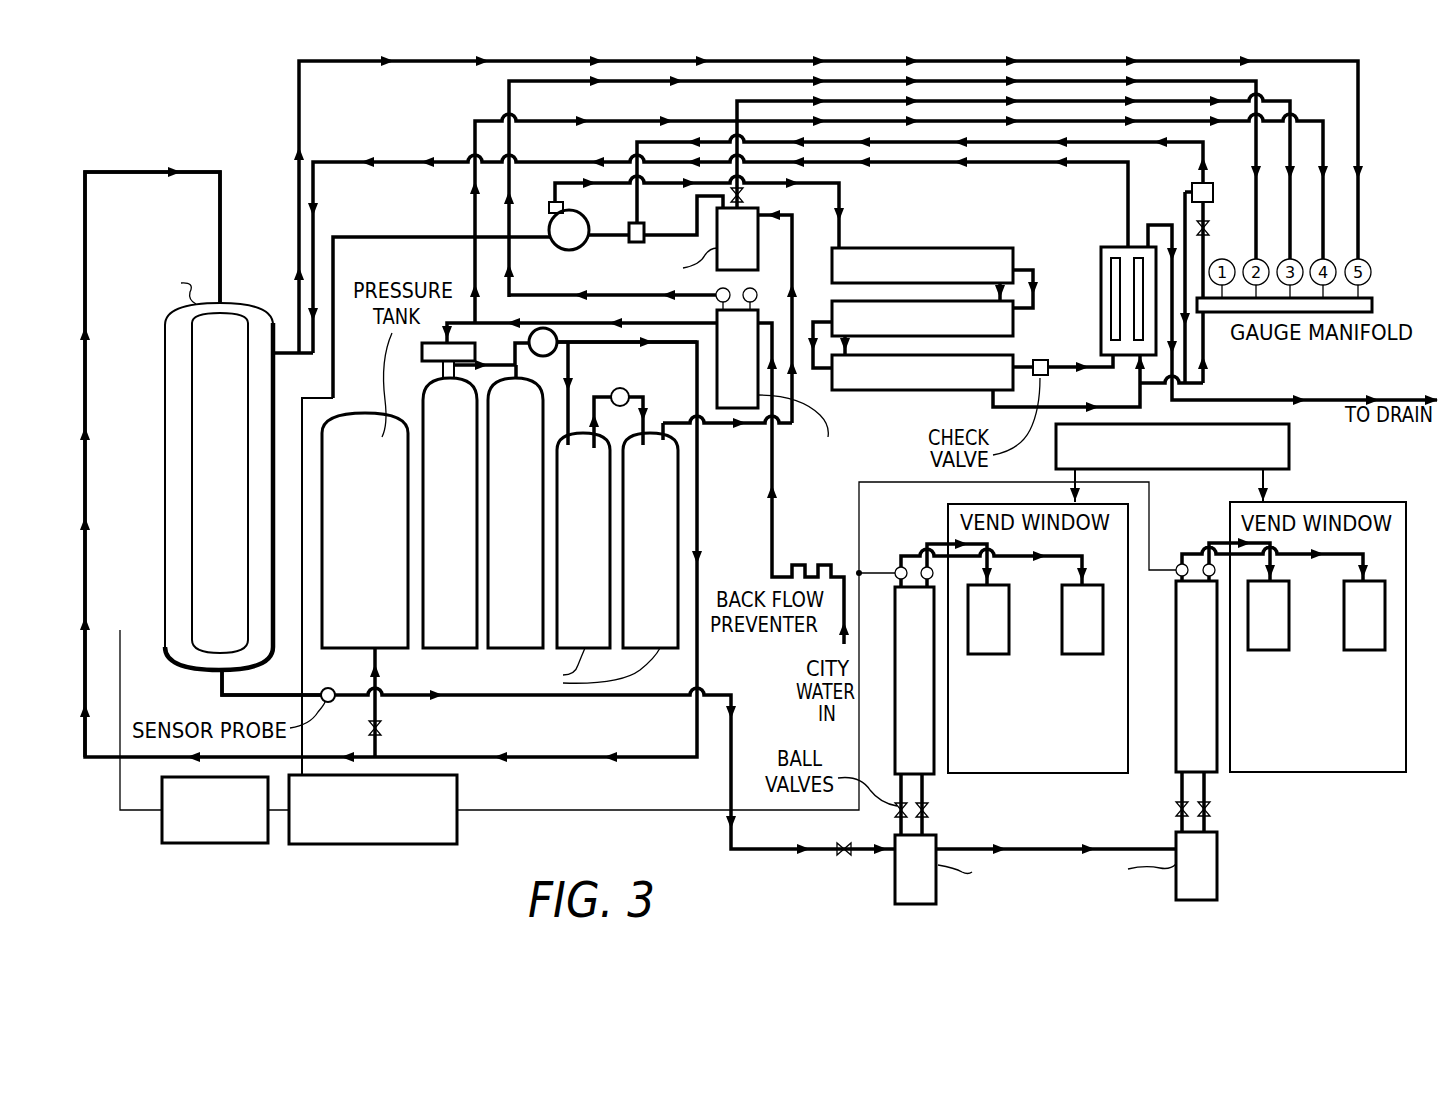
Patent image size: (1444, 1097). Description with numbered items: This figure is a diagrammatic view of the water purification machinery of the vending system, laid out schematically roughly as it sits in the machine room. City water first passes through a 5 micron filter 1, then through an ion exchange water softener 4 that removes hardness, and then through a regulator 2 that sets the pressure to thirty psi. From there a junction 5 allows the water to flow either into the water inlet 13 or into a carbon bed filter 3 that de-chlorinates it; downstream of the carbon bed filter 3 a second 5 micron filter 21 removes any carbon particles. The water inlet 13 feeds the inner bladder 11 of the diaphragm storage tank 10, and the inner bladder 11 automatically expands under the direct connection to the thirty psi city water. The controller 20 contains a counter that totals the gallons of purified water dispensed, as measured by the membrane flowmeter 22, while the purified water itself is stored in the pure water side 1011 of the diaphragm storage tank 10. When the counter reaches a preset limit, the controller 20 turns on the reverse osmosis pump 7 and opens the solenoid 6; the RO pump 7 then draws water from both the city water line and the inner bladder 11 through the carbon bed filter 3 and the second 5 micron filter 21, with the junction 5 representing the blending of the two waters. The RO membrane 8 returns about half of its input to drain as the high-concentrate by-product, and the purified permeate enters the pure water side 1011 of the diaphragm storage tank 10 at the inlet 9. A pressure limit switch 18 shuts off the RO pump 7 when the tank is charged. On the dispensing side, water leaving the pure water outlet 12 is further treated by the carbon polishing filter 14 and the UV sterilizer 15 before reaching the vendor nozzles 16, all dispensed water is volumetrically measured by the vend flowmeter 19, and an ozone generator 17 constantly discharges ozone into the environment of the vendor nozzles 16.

The 5 micron filter 1 is at (748, 385).
The regulator 2 is at (529, 342).
The carbon bed filter 3 is at (595, 613).
The ion exchange water softener 4 is at (462, 613).
The junction 5 is at (556, 348).
The solenoid 6 is at (645, 225).
The reverse osmosis pump 7 is at (552, 226).
The RO membrane 8 is at (923, 248).
The inlet 9 is at (290, 377).
The diaphragm storage tank 10 is at (168, 503).
The inner bladder 11 is at (240, 553).
The pure water outlet 12 is at (233, 693).
The water inlet 13 is at (123, 172).
The carbon polishing filter 14 is at (938, 886).
The UV sterilizer 15 is at (924, 758).
The vendor nozzle 16 is at (981, 651).
The ozone generator 17 is at (1289, 449).
The pressure limit switch 18 is at (220, 843).
The vend flowmeter 19 is at (899, 565).
The controller 20 is at (382, 844).
The second 5 micron filter 21 is at (752, 248).
The membrane flowmeter 22 is at (1101, 262).
The pure water side 1011 is at (180, 372).